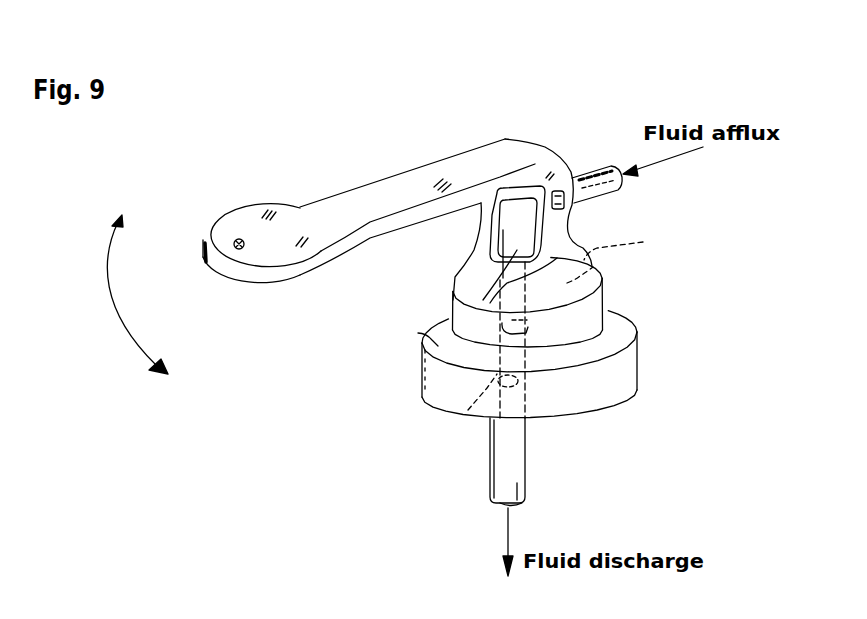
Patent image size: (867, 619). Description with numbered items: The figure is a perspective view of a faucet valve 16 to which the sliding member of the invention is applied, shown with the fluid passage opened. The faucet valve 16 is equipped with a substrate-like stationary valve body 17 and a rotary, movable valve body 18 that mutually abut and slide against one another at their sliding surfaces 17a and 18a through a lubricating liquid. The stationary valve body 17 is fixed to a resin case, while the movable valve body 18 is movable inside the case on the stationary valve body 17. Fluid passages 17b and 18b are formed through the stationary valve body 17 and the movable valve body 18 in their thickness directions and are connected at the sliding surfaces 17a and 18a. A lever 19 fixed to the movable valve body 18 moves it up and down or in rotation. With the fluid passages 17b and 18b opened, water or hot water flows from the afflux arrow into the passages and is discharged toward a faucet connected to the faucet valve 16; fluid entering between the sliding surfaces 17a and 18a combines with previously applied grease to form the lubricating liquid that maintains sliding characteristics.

The faucet valve 16 is at (555, 141).
The stationary valve body 17 is at (615, 378).
The sliding surface 17a is at (418, 333).
The fluid passage 17b is at (468, 410).
The rotary valve body 18 is at (604, 291).
The sliding surface 18a is at (444, 340).
The fluid passage 18b is at (626, 257).
The lever 19 is at (239, 278).